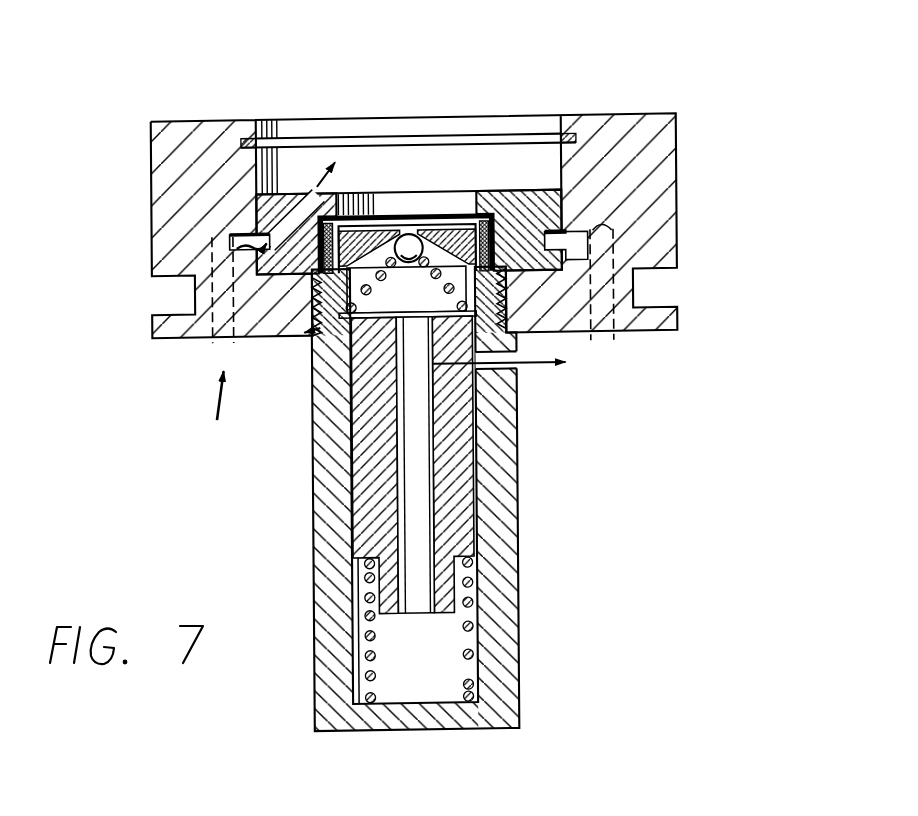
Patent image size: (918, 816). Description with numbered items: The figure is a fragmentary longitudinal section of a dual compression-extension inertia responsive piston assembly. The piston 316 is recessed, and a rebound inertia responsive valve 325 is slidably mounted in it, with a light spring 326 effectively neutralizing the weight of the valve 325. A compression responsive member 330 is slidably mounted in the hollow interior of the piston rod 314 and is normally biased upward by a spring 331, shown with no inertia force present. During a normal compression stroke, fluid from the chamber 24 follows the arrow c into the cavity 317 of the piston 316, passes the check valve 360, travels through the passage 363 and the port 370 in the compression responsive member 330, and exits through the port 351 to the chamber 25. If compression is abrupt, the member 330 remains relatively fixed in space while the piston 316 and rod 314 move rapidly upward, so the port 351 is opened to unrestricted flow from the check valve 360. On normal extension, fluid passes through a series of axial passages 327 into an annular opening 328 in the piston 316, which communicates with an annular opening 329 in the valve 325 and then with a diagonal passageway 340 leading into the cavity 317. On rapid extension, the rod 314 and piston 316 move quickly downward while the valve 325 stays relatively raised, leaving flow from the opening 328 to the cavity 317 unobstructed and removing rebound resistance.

The chamber 24 is at (588, 91).
The chamber 25 is at (584, 541).
The piston rod 314 is at (312, 561).
The piston 316 is at (152, 146).
The cavity 317 is at (375, 157).
The rebound inertia responsive valve 325 is at (285, 190).
The light spring 326 is at (472, 183).
The axial passages 327 is at (214, 344).
The annular opening 328 is at (578, 249).
The annular opening 329 is at (233, 235).
The compression responsive member 330 is at (366, 522).
The spring 331 is at (469, 628).
The diagonal passageway 340 is at (261, 196).
The port 351 is at (513, 375).
The check valve 360 is at (413, 235).
The passage 363 is at (417, 472).
The port 370 is at (453, 386).
The arrow c is at (411, 230).